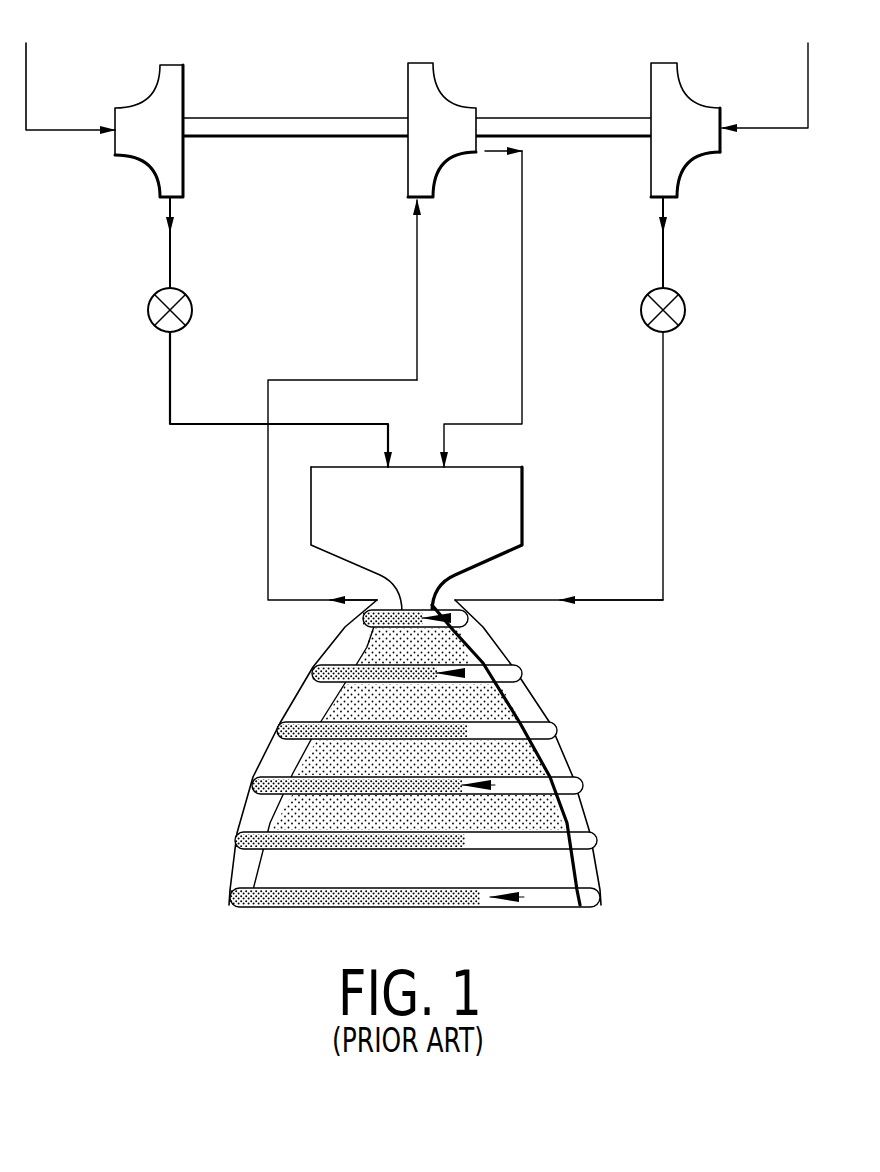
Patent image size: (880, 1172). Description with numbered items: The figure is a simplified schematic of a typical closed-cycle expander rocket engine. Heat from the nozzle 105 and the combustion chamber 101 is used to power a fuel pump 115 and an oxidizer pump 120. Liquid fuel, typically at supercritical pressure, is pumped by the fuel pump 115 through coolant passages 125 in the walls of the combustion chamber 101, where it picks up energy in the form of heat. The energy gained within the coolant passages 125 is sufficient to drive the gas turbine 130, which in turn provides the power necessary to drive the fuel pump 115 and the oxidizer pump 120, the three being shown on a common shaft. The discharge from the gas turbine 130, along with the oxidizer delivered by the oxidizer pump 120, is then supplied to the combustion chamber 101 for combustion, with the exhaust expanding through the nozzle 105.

The combustion chamber 101 is at (522, 477).
The nozzle 105 is at (246, 803).
The fuel pump 115 is at (678, 80).
The oxidizer pump 120 is at (148, 97).
The coolant passages 125 is at (527, 778).
The gas turbine 130 is at (436, 86).